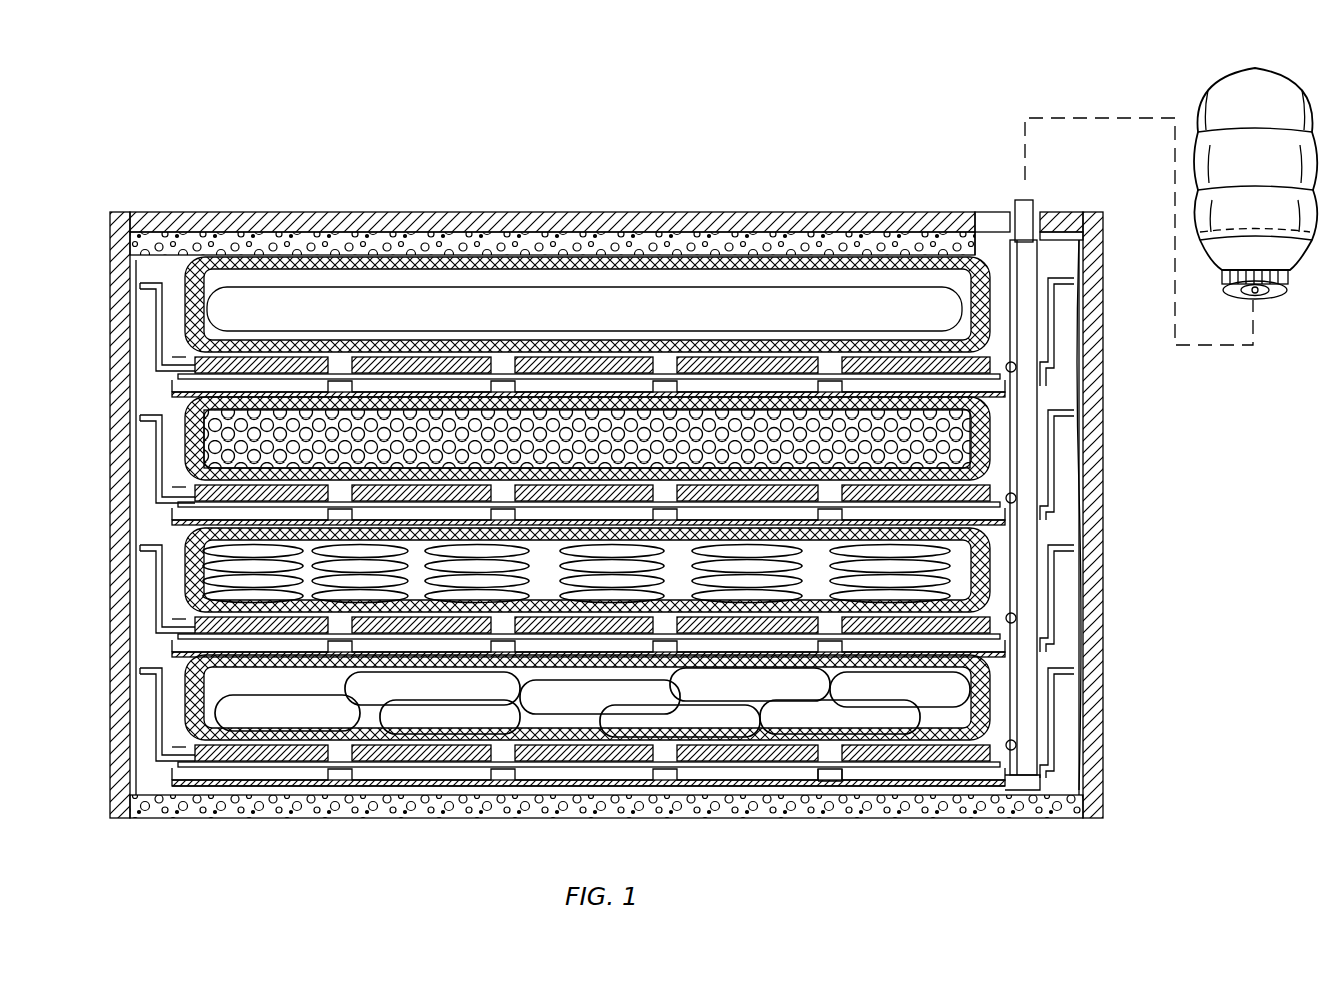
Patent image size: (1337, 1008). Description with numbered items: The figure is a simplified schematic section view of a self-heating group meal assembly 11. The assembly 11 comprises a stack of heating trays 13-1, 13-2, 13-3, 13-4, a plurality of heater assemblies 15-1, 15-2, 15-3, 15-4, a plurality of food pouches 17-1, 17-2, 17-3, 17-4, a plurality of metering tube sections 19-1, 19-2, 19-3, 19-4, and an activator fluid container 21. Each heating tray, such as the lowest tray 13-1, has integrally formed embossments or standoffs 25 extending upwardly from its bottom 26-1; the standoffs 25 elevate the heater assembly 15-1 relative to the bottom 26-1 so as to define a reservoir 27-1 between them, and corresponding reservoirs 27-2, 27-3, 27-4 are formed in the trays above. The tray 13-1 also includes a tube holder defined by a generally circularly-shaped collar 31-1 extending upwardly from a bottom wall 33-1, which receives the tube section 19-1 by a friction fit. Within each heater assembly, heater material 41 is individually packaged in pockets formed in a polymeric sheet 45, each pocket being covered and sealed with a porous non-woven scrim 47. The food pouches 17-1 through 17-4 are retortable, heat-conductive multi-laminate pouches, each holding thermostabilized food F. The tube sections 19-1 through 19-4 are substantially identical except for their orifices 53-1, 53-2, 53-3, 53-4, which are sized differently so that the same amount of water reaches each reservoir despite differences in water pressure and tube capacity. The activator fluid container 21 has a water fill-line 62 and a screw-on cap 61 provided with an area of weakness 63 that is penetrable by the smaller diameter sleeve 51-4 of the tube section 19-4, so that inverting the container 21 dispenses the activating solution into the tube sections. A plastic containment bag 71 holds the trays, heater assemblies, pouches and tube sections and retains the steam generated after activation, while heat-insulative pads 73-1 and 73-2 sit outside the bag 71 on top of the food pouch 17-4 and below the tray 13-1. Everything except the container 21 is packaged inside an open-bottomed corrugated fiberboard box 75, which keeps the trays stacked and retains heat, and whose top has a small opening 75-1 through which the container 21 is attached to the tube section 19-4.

The self-heating group meal assembly 11 is at (256, 150).
The heat-insulative pad 73-1 is at (472, 244).
The heat-insulative pad 73-2 is at (222, 815).
The plastic containment bag 71 is at (150, 652).
The corrugated fiberboard box 75 is at (1030, 510).
The smaller diameter sleeve 51-4 is at (1018, 205).
The small opening 75-1 is at (1050, 232).
The food pouch 17-4 is at (186, 264).
The food pouch 17-3 is at (196, 402).
The food pouch 17-2 is at (196, 534).
The food pouch 17-1 is at (196, 662).
The heating tray 13-4 is at (150, 325).
The heating tray 13-3 is at (150, 450).
The heating tray 13-2 is at (150, 580).
The heating tray 13-1 is at (150, 718).
The heater assembly 15-4 is at (180, 362).
The heater assembly 15-3 is at (180, 492).
The heater assembly 15-2 is at (180, 622).
The heater assembly 15-1 is at (180, 750).
The reservoir 27-4 is at (372, 380).
The reservoir 27-3 is at (415, 505).
The reservoir 27-2 is at (397, 638).
The reservoir 27-1 is at (400, 762).
The metering tube section 19-4 is at (1022, 265).
The metering tube section 19-3 is at (1024, 432).
The metering tube section 19-2 is at (1024, 565).
The metering tube section 19-1 is at (1022, 690).
The orifice 53-4 is at (1016, 367).
The orifice 53-3 is at (1016, 498).
The orifice 53-2 is at (1016, 618).
The orifice 53-1 is at (1016, 745).
The polymeric sheet 45 is at (962, 716).
The thermostabilized food F is at (296, 712).
The heater material 41 is at (400, 768).
The collar 31-1 is at (1045, 762).
The porous non-woven scrim 47 is at (906, 768).
The bottom 26-1 is at (782, 790).
The standoffs 25 is at (505, 790).
The bottom wall 33-1 is at (1040, 792).
The activator fluid container 21 is at (1192, 92).
The water fill-line 62 is at (1268, 230).
The screw-on cap 61 is at (1268, 295).
The area of weakness 63 is at (1250, 293).